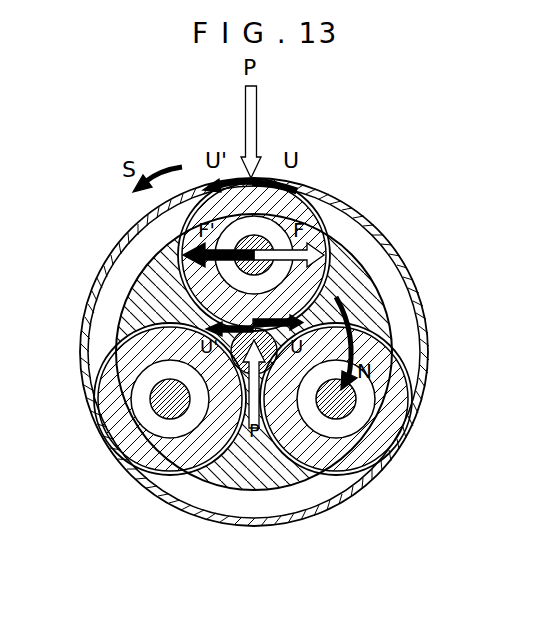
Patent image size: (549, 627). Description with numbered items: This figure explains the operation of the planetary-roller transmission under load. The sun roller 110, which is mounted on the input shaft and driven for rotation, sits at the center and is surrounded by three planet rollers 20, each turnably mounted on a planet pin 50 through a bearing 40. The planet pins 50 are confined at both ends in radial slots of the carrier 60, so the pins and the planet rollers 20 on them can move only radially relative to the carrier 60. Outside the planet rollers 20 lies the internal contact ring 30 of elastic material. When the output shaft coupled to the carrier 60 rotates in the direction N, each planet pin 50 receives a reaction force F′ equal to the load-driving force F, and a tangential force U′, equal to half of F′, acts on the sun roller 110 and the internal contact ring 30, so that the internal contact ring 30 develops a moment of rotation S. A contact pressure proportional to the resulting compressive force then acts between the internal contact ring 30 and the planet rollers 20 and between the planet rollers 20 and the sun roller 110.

The planet rollers 20 is at (135, 468).
The internal contact ring 30 is at (95, 288).
The bearing 40 is at (142, 381).
The planet pins 50 is at (117, 421).
The carrier 60 is at (148, 277).
The sun roller 110 is at (297, 403).